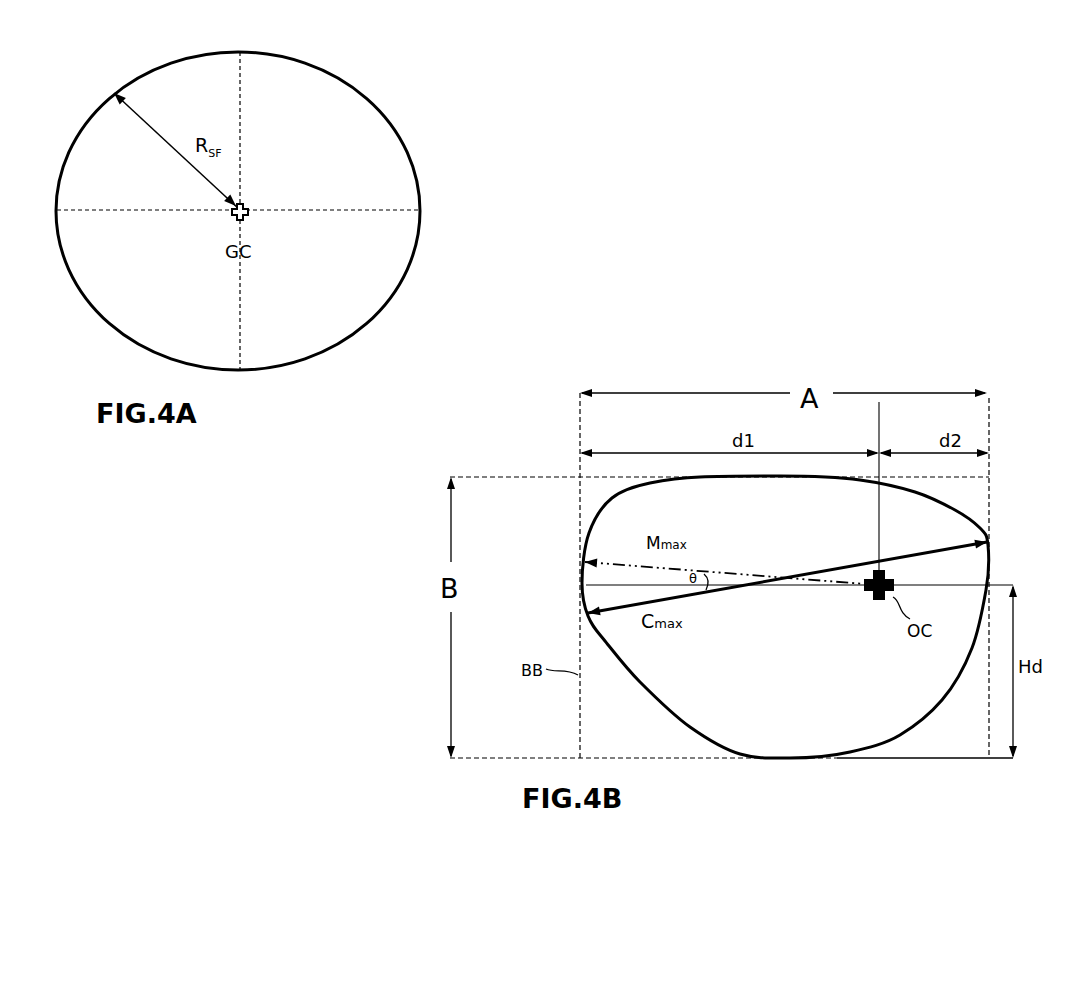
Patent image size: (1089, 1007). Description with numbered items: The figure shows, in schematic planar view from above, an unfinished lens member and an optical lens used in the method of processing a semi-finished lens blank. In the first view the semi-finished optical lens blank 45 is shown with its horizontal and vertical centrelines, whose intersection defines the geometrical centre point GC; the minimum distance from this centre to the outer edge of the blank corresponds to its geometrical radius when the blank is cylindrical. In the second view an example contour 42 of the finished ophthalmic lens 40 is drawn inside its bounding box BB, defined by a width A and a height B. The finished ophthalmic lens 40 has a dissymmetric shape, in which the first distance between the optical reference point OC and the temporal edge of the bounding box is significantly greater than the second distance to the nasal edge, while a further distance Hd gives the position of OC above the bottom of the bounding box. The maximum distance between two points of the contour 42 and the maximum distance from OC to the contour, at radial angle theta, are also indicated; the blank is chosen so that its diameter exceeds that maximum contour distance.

In FIG. 4A, the spherical reference surface / circle 45 is at (421, 278).
In FIG. 4B, the finished ophthalmic lens 40 is at (731, 608).
In FIG. 4B, the contour of a finished ophthalmic lens 42 is at (790, 758).